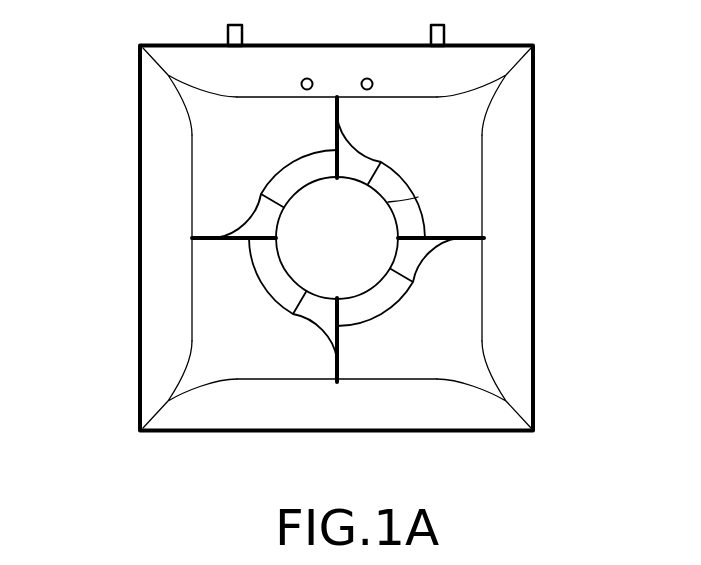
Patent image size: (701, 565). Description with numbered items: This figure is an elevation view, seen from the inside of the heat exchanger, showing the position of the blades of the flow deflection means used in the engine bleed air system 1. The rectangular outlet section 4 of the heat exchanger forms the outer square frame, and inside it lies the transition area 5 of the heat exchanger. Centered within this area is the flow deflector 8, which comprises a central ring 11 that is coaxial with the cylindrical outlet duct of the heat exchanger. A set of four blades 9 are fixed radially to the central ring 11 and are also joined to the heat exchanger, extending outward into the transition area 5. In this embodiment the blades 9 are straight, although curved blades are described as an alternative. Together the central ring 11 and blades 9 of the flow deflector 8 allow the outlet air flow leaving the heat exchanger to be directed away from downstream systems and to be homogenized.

The engine bleed air system 1 is at (312, 228).
The rectangular outlet section 4 is at (533, 293).
The transition area 5 is at (157, 175).
The flow deflector 8 is at (400, 322).
The blades 9 is at (424, 243).
The central ring 11 is at (414, 198).